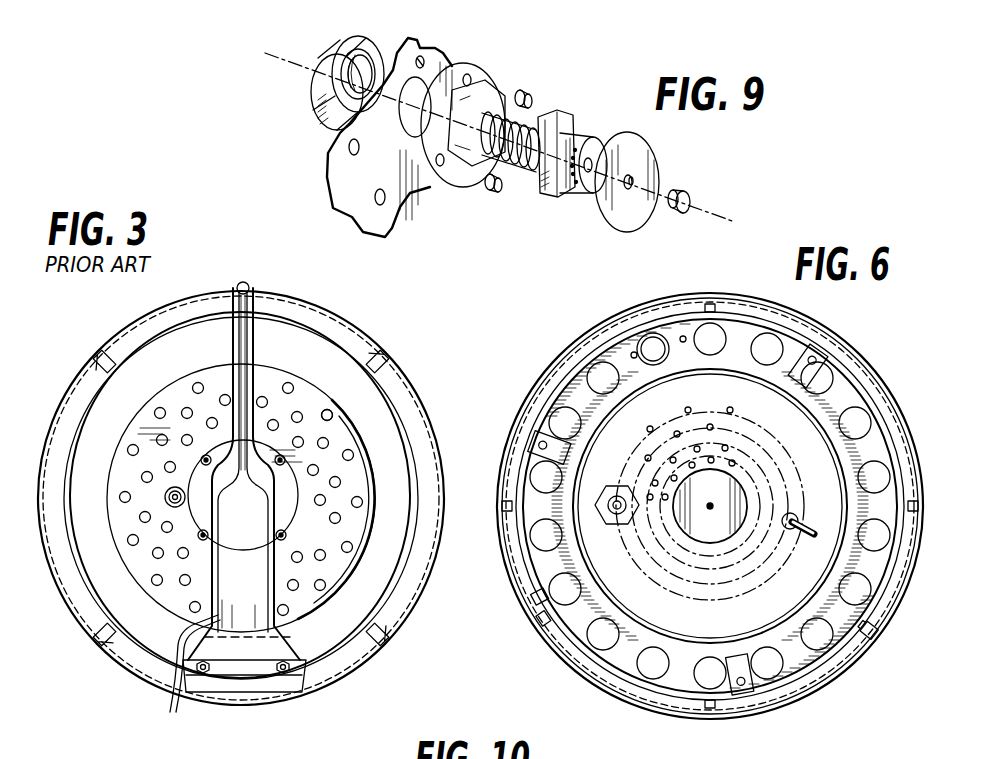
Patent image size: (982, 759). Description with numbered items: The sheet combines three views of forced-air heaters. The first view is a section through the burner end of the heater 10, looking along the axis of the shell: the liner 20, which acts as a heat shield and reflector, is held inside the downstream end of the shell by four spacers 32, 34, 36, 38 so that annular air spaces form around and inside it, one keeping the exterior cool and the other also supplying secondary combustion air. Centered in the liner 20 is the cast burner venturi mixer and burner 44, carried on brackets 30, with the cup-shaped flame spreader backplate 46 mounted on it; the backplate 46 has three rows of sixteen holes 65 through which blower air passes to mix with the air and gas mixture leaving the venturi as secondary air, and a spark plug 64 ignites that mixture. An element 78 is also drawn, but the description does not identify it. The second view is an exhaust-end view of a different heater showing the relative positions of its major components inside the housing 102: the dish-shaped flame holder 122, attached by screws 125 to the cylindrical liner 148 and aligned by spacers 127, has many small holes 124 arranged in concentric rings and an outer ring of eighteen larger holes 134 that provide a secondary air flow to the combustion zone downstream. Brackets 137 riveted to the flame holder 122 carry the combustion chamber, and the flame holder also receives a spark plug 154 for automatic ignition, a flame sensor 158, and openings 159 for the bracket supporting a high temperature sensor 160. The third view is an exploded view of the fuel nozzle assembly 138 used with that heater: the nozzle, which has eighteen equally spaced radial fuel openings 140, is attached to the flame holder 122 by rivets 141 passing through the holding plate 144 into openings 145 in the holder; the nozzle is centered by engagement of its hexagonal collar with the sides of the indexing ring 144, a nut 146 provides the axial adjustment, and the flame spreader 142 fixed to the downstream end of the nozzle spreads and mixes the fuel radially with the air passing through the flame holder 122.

In FIG. 3, the forced-air heater 10 is at (76, 630).
In FIG. 3, the liner 20 is at (217, 298).
In FIG. 3, the brackets 30 is at (266, 694).
In FIG. 3, the spacer 32 is at (115, 353).
In FIG. 3, the spacer 34 is at (397, 373).
In FIG. 3, the spacer 36 is at (117, 644).
In FIG. 3, the spacer 38 is at (384, 633).
In FIG. 3, the burner venturi mixer and burner 44 is at (284, 623).
In FIG. 3, the flame spreader backplate 46 is at (204, 377).
In FIG. 3, the spark plug 64 is at (164, 497).
In FIG. 3, the holes 65 is at (333, 414).
In FIG. 3, the hose 78 is at (175, 644).
In FIG. 6, the housing 102 is at (890, 608).
In FIG. 9, the flame holder 122 is at (393, 230).
In FIG. 6, the small holes 124 is at (745, 414).
In FIG. 6, the screws 125 is at (523, 620).
In FIG. 6, the spacers 127 is at (526, 601).
In FIG. 6, the holes 134 is at (594, 372).
In FIG. 6, the brackets 137 is at (545, 440).
In FIG. 9, the fuel nozzle assembly 138 is at (541, 200).
In FIG. 9, the radial openings 140 is at (583, 137).
In FIG. 9, the rivets 141 is at (493, 192).
In FIG. 9, the flame spreader 142 is at (628, 210).
In FIG. 6, the flame spreader 142 is at (741, 491).
In FIG. 9, the holding plate 144 is at (487, 78).
In FIG. 9, the openings 145 is at (424, 58).
In FIG. 9, the nut 146 is at (329, 56).
In FIG. 6, the cylindrical liner 148 is at (895, 440).
In FIG. 6, the spark plug 154 is at (616, 527).
In FIG. 6, the flame sensor 158 is at (802, 540).
In FIG. 6, the openings 159 is at (683, 335).
In FIG. 6, the high temperature sensor 160 is at (658, 331).